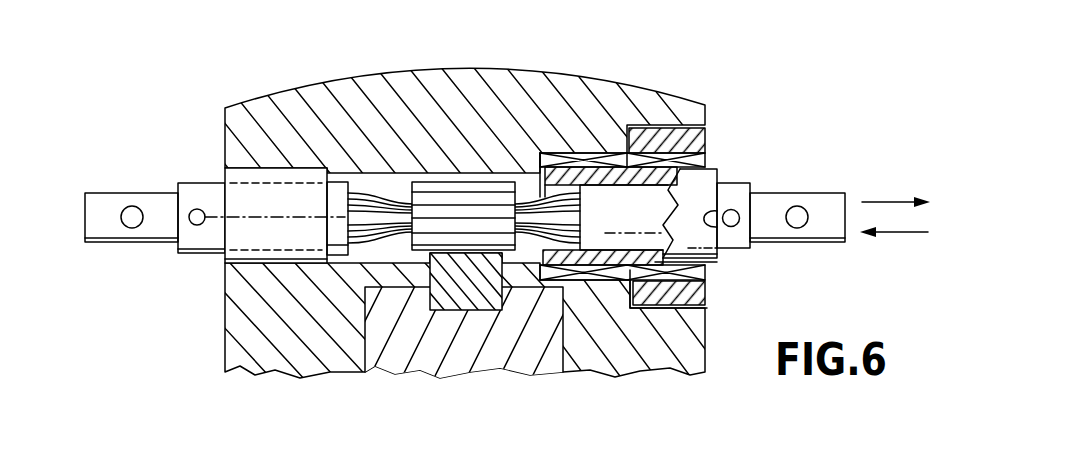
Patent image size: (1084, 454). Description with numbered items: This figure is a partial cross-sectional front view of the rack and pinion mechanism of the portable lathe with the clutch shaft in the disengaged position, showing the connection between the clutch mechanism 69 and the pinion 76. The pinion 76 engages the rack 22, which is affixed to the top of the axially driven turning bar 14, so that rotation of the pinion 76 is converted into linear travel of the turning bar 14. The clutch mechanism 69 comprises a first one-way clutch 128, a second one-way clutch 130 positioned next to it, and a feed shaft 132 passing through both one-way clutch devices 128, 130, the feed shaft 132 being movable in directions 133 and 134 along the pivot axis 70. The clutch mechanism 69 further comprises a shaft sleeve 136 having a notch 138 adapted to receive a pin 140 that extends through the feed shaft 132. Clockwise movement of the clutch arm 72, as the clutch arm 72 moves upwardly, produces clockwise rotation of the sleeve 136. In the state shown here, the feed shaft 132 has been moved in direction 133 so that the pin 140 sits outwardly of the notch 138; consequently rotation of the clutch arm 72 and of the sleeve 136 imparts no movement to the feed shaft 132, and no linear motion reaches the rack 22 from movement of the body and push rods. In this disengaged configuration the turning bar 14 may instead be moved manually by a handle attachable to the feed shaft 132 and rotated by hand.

The turning bar 14 is at (400, 355).
The rack 22 is at (468, 300).
The clutch mechanism 69 is at (722, 117).
The pivot axis 70 is at (242, 219).
The clutch arm 72 is at (707, 293).
The pinion 76 is at (467, 182).
The first one-way clutch 128 is at (708, 158).
The second one-way clutch 130 is at (590, 152).
The feed shaft 132 is at (830, 243).
The direction 133 is at (900, 200).
The direction 134 is at (905, 236).
The shaft sleeve 136 is at (712, 268).
The notch 138 is at (712, 212).
The pin 140 is at (734, 228).